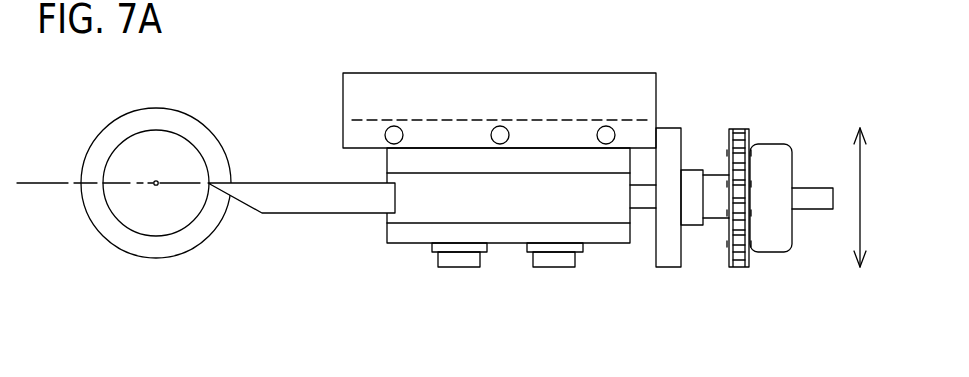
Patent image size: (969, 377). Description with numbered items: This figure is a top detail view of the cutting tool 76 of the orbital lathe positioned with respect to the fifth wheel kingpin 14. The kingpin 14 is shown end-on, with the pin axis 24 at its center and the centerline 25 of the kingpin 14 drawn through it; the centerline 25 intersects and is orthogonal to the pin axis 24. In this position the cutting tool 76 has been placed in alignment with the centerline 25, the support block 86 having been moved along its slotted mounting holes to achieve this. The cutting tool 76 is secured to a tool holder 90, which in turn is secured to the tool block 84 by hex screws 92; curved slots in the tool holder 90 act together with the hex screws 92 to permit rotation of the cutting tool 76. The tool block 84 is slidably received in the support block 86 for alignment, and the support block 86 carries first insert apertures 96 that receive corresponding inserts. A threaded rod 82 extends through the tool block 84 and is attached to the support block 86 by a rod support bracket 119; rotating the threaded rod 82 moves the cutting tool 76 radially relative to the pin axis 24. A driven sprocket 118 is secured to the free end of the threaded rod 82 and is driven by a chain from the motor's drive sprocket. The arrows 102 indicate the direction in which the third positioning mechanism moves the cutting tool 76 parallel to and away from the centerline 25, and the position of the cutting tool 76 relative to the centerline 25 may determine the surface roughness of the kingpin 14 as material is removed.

The fifth wheel kingpin 14 is at (202, 115).
The pin axis 24 is at (156, 186).
The centerline 25 is at (50, 183).
The cutting tool 76 is at (340, 203).
The threaded rod 82 is at (813, 198).
The tool block 84 is at (532, 160).
The support block 86 is at (438, 73).
The tool holder 90 is at (508, 208).
The hex screws 92 is at (458, 267).
The first insert aperture 96 is at (495, 127).
The arrows 102 is at (862, 197).
The driven sprocket 118 is at (772, 142).
The rod support bracket 119 is at (670, 127).